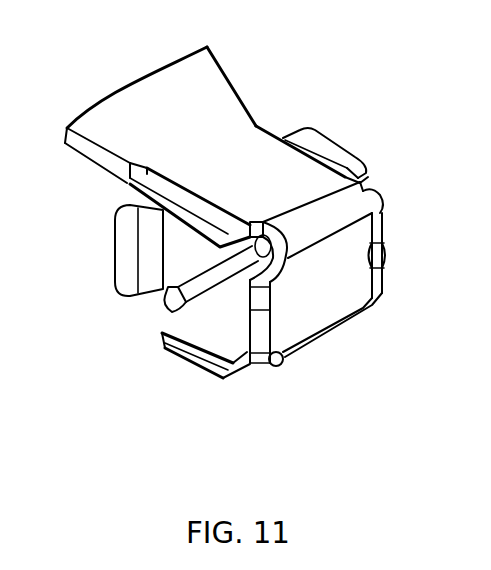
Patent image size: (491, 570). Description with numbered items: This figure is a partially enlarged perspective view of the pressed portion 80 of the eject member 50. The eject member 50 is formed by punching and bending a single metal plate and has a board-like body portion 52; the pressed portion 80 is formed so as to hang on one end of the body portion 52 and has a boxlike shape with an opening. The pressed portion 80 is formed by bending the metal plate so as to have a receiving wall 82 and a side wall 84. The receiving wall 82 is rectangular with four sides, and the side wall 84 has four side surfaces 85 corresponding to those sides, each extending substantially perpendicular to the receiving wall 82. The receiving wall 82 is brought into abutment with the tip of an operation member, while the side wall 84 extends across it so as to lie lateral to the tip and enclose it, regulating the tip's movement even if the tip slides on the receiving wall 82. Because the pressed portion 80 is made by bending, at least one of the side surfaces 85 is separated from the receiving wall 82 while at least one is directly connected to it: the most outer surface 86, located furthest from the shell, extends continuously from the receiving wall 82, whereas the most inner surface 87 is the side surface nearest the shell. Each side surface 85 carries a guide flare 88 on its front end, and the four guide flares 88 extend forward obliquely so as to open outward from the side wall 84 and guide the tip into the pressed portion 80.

The eject member 50 is at (126, 104).
The body portion 52 is at (217, 85).
The pressed portion 80 is at (313, 122).
The receiving wall 82 is at (353, 150).
The side wall 84 is at (304, 334).
The side surfaces 85 is at (290, 173).
The most outer surface 86 is at (343, 310).
The most inner surface 87 is at (177, 260).
The guide flare 88 is at (130, 184).